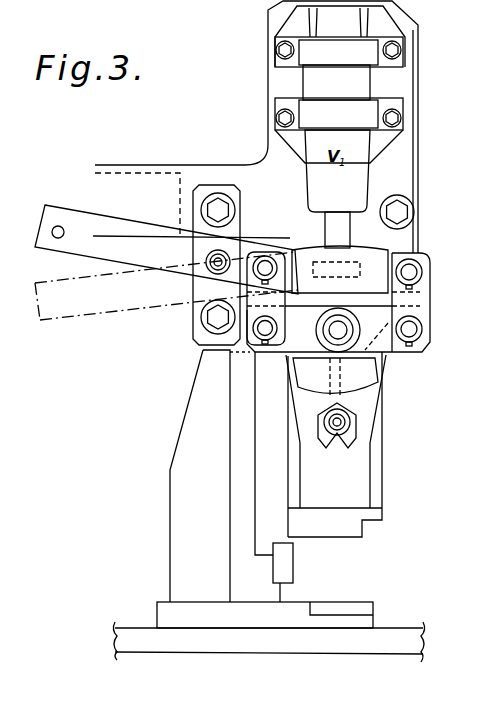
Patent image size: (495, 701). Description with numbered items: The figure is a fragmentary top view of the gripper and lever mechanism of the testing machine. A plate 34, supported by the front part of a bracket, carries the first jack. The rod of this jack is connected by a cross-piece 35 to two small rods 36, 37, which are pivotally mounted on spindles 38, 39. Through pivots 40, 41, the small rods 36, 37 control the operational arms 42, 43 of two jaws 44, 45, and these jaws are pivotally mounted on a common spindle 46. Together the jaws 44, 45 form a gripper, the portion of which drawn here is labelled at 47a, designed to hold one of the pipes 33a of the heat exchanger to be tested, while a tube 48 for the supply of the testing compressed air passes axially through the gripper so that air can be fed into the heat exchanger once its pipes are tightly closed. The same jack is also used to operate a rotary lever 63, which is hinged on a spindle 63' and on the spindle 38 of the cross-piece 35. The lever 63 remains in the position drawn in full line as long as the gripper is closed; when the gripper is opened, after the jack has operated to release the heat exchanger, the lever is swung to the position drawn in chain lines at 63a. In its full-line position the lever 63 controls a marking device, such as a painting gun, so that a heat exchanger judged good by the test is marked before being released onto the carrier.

The plate 34 is at (420, 127).
The cross-piece 35 is at (372, 262).
The small rod 36 is at (425, 298).
The small rod 37 is at (193, 302).
The spindle 38 is at (266, 257).
The spindle 39 is at (412, 271).
The pivot 40 is at (252, 341).
The pivot 41 is at (411, 330).
The operational arm 42 is at (384, 348).
The operational arm 43 is at (285, 360).
The jaw 44 is at (292, 405).
The jaw 45 is at (365, 398).
The spindle 46 is at (352, 335).
The knob housing 47a is at (322, 438).
The tube 48 is at (346, 430).
The pipe 33a is at (348, 422).
The rotary lever 63 is at (166, 233).
The spindle 63' is at (190, 238).
The lever in chain-line position 63a is at (52, 312).